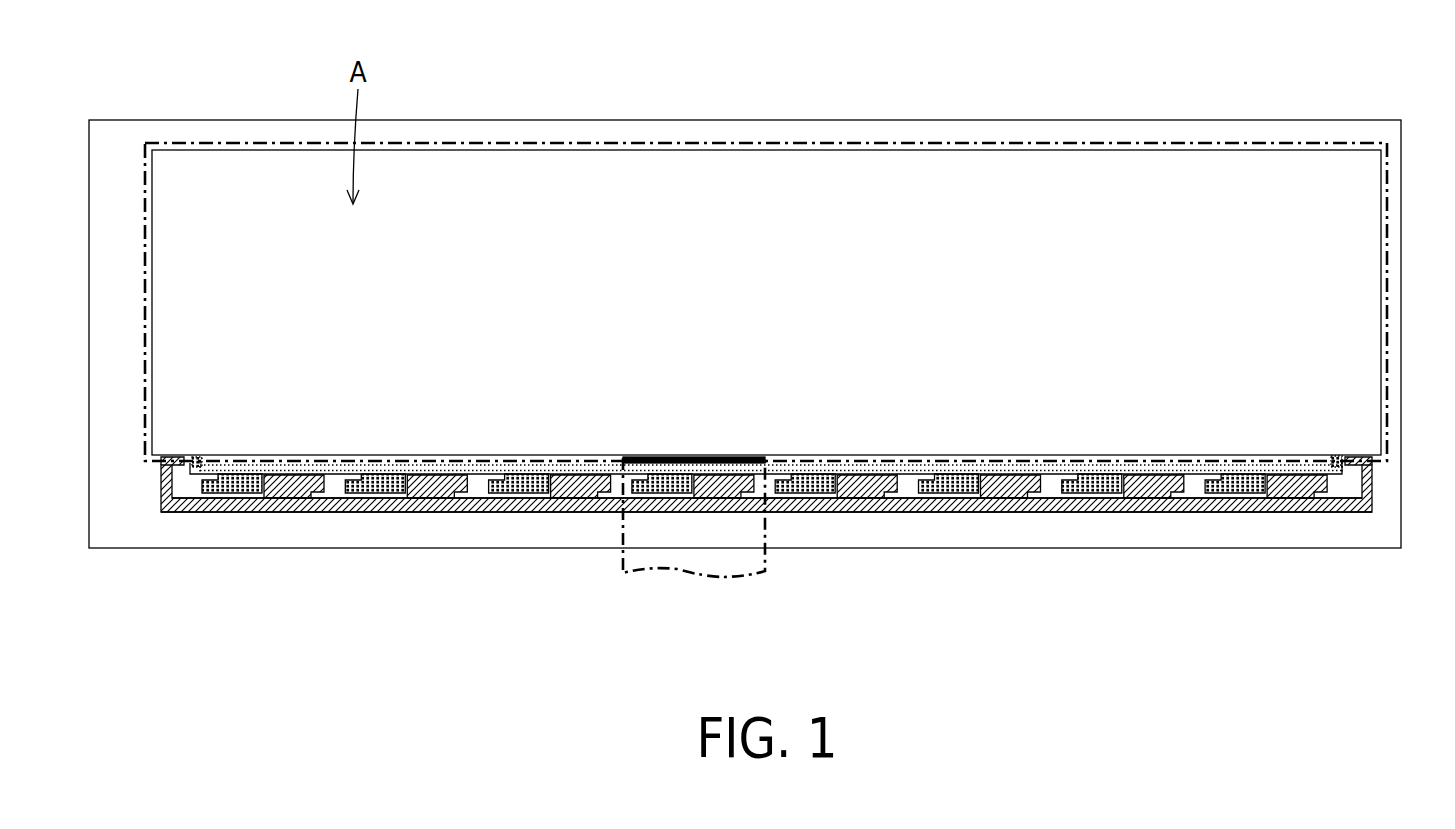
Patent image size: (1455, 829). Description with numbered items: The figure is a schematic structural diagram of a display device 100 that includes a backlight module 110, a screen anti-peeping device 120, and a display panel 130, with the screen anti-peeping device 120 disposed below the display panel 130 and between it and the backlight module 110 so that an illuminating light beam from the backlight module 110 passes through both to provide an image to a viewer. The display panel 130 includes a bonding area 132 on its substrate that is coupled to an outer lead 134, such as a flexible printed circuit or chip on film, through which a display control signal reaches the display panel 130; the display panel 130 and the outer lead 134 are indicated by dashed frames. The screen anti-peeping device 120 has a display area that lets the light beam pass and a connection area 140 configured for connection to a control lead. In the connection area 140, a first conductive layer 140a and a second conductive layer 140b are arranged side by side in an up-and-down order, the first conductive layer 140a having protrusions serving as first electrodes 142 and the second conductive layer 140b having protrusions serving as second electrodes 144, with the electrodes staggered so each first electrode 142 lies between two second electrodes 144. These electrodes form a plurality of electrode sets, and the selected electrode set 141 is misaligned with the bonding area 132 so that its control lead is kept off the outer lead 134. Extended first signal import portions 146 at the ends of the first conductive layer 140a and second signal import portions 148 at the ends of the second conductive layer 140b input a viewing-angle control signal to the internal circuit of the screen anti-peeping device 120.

The display device 100 is at (1405, 658).
The backlight module 110 is at (1060, 120).
The screen anti-peeping device 120 is at (609, 143).
The display panel 130 is at (887, 141).
The bonding area 132 is at (685, 457).
The outer lead 134 is at (693, 578).
The connection area 140 is at (147, 485).
The first conductive layer 140a is at (530, 484).
The second conductive layer 140b is at (583, 503).
The electrode set 141 is at (862, 484).
The first electrode 142 is at (1090, 483).
The second electrode 144 is at (1152, 487).
The first signal import portion 146 is at (196, 467).
The second signal import portion 148 is at (176, 468).